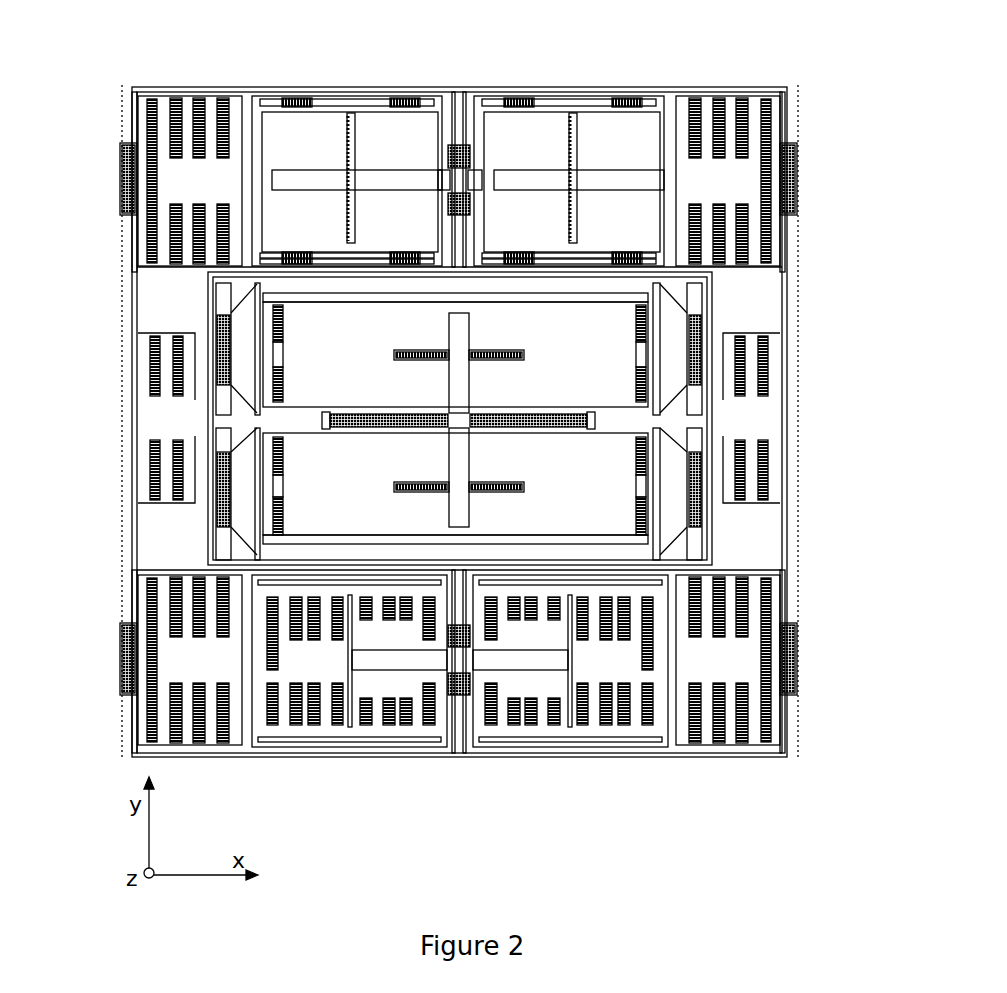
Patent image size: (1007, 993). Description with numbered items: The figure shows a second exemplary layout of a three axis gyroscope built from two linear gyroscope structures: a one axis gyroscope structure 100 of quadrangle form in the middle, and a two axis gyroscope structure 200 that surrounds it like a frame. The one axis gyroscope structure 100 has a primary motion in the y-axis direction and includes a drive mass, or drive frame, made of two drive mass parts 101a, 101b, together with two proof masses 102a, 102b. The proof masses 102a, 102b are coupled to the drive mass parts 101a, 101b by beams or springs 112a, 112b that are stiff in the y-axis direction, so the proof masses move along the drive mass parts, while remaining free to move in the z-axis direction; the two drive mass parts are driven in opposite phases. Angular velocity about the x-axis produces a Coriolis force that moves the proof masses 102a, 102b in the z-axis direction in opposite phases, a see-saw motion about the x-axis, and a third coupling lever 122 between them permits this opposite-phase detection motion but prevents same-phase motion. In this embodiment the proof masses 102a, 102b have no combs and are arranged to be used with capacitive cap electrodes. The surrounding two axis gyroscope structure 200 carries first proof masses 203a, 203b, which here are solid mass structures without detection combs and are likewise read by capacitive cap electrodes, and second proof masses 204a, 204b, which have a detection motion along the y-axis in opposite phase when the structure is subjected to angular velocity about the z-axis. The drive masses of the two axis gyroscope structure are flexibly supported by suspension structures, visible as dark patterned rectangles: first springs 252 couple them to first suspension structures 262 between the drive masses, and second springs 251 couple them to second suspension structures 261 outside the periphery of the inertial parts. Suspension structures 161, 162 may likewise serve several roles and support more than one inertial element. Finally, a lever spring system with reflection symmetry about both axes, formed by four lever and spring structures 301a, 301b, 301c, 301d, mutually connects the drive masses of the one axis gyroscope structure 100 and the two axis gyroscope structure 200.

The two axis gyroscope structure 200 is at (786, 66).
The one axis gyroscope structure 100 is at (382, 362).
The drive mass part 101a is at (300, 285).
The drive mass part 101b is at (267, 497).
The proof mass 102a is at (317, 343).
The proof mass 102b is at (320, 447).
The beam or spring 112a is at (273, 320).
The beam or spring 112b is at (273, 517).
The third coupling lever 122 is at (457, 378).
The suspension structure 161 is at (600, 420).
The suspension structure 162 is at (218, 328).
The first proof mass 203a is at (278, 122).
The first proof mass 203b is at (632, 135).
The second proof mass 204a is at (367, 728).
The second proof mass 204b is at (602, 727).
The second spring 251 is at (132, 110).
The first spring 252 is at (455, 145).
The second suspension structure 261 is at (122, 176).
The first suspension structure 262 is at (458, 193).
The lever and spring structure 301a is at (242, 338).
The lever and spring structure 301b is at (692, 337).
The lever and spring structure 301c is at (245, 532).
The lever and spring structure 301d is at (697, 497).